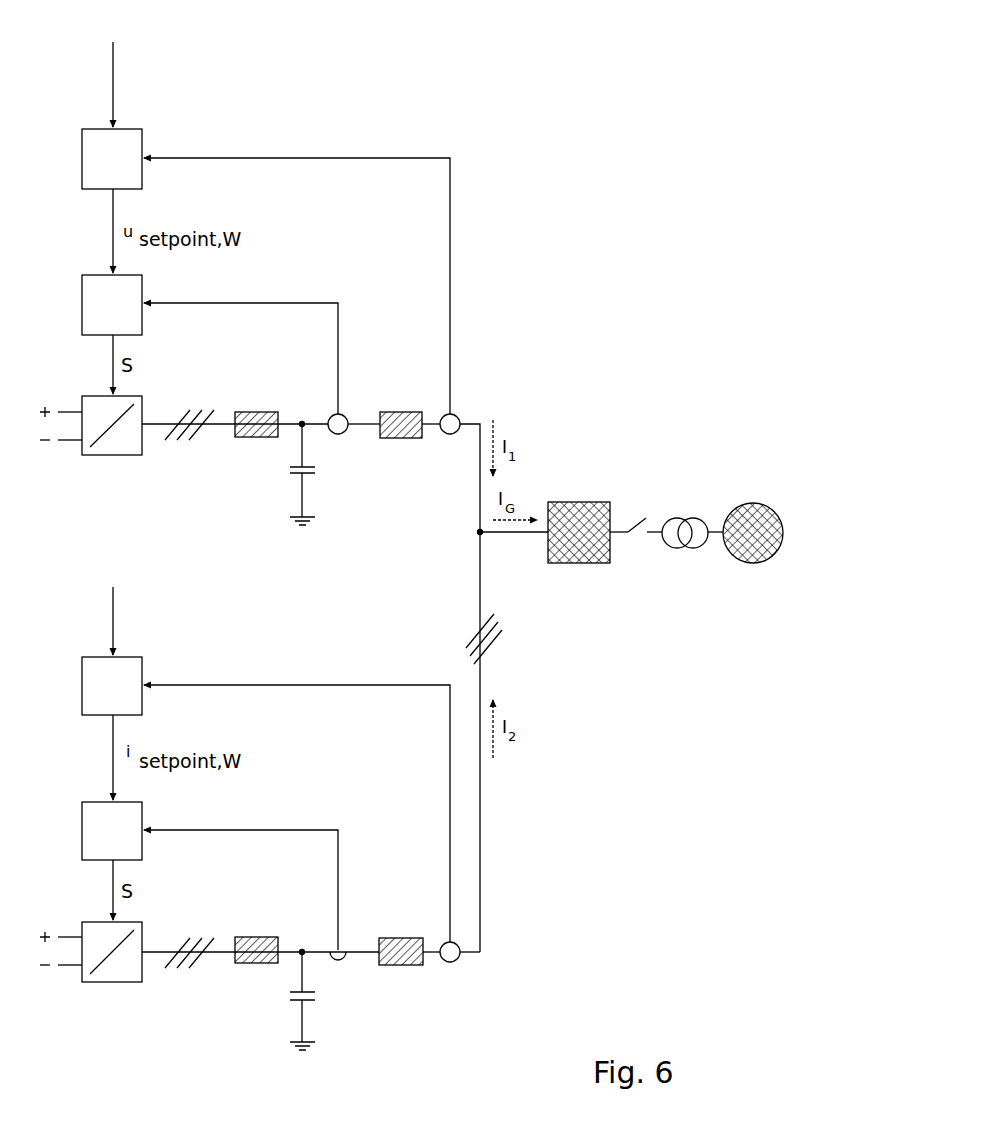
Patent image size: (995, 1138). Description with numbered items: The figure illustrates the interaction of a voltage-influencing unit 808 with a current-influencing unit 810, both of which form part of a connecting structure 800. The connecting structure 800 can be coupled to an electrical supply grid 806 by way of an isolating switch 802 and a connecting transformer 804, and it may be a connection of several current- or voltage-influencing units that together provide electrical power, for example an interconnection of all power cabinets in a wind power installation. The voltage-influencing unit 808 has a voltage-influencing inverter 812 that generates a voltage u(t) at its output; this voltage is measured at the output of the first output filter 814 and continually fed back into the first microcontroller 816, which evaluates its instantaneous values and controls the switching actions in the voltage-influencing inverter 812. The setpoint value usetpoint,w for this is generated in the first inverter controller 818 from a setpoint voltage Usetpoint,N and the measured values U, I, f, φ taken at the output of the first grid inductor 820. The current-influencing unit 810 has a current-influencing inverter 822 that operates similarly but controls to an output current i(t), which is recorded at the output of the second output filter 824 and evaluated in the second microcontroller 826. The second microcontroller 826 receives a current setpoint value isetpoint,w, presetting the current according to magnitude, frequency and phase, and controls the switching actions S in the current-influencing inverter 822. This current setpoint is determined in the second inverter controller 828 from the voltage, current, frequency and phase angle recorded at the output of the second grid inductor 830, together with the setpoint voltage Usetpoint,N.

The connecting structure 800 is at (584, 488).
The isolating switch 802 is at (640, 501).
The connecting transformer 804 is at (687, 562).
The electrical supply grid 806 is at (742, 503).
The voltage-influencing unit 808 is at (303, 120).
The current-influencing unit 810 is at (405, 1003).
The voltage-influencing inverter 812 is at (108, 467).
The first output filter 814 is at (252, 447).
The first microcontroller 816 is at (98, 272).
The first inverter controller 818 is at (98, 125).
The first grid inductor 820 is at (403, 412).
The current-influencing inverter 822 is at (105, 992).
The second output filter 824 is at (252, 975).
The second microcontroller 826 is at (98, 800).
The second inverter controller 828 is at (98, 653).
The second grid inductor 830 is at (403, 937).